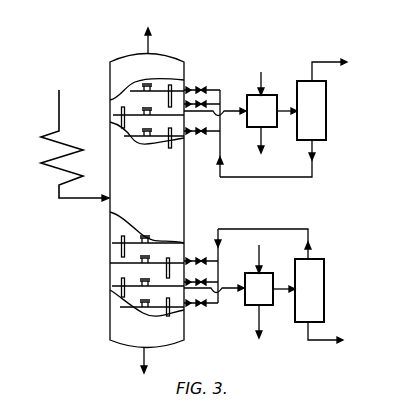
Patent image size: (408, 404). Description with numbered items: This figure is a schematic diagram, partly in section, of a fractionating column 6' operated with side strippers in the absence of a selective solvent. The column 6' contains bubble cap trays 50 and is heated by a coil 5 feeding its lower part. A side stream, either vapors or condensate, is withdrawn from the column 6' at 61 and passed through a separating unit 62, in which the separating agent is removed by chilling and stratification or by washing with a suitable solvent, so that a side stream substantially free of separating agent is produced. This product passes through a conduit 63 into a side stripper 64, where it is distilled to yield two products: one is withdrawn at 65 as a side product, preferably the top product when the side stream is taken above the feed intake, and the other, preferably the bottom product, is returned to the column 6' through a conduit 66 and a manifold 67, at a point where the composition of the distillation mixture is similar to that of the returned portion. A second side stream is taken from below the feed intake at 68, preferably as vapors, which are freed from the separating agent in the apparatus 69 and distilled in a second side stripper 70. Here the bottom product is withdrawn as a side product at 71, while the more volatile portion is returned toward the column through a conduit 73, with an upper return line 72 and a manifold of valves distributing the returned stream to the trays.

The heating coil 5 is at (42, 136).
The fractionating column 6' is at (148, 200).
The bubble cap trays 50 is at (112, 108).
The side stream withdrawal point 61 is at (188, 112).
The separating unit 62 is at (250, 96).
The conduit 63 is at (280, 110).
The side stripper 64 is at (326, 103).
The side product outlet 65 is at (314, 62).
The conduit 66 is at (250, 177).
The manifold 67 is at (218, 88).
The side stream withdrawal point 68 is at (185, 289).
The apparatus 69 is at (245, 276).
The side stripper 70 is at (324, 271).
The side product outlet 71 is at (316, 340).
The return line 72 is at (250, 229).
The conduit 73 is at (208, 273).